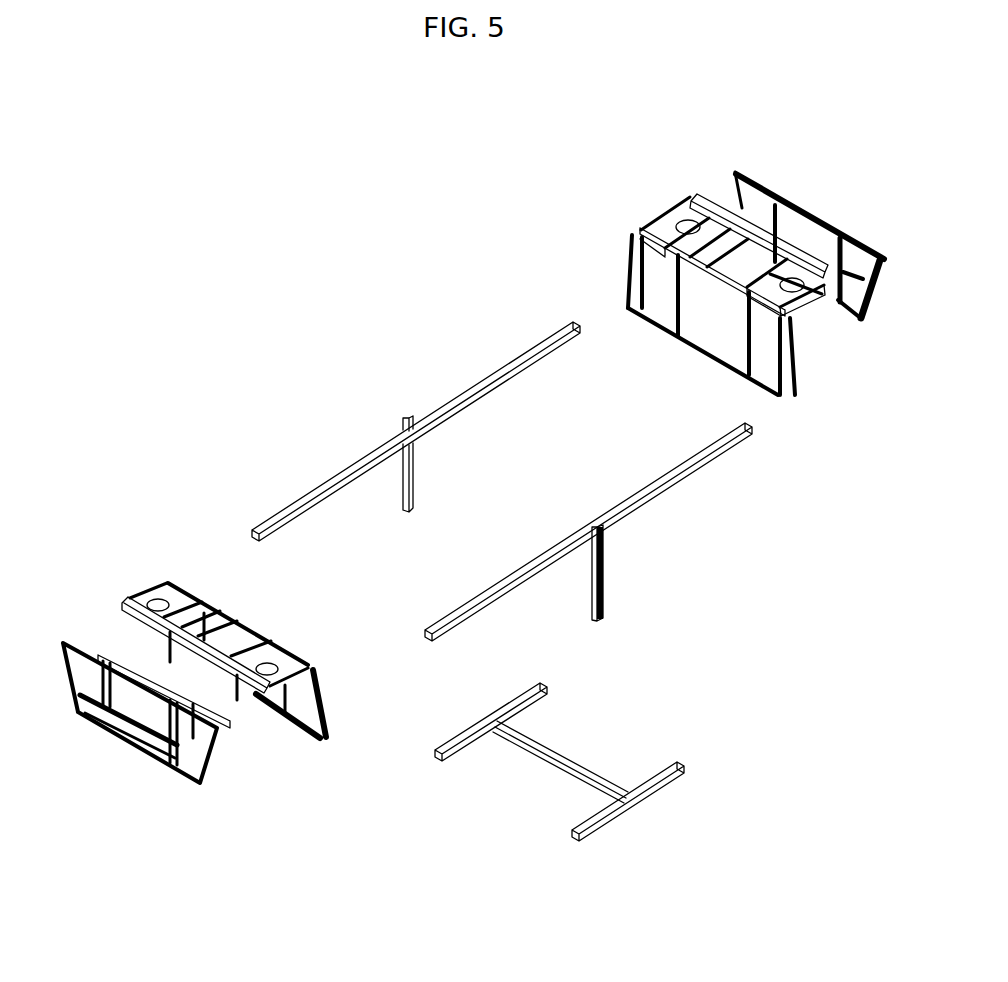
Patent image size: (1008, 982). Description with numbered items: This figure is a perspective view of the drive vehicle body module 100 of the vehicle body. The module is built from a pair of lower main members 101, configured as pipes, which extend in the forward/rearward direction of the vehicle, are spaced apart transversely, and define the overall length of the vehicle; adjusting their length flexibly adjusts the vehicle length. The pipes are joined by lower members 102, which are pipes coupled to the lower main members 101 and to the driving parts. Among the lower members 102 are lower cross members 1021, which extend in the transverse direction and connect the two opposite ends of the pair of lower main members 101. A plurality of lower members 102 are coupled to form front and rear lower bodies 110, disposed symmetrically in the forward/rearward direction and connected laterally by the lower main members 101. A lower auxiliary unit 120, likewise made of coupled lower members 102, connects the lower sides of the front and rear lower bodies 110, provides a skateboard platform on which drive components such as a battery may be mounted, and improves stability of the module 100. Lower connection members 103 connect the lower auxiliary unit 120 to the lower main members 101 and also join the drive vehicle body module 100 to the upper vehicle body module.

The drive vehicle body module 100 is at (157, 273).
The lower main member 101 is at (510, 368).
The lower member 102 is at (793, 353).
The lower connection member 103 is at (406, 418).
The front and rear lower bodies 110 is at (698, 180).
The lower auxiliary unit 120 is at (573, 851).
The lower cross member 1021 is at (800, 208).